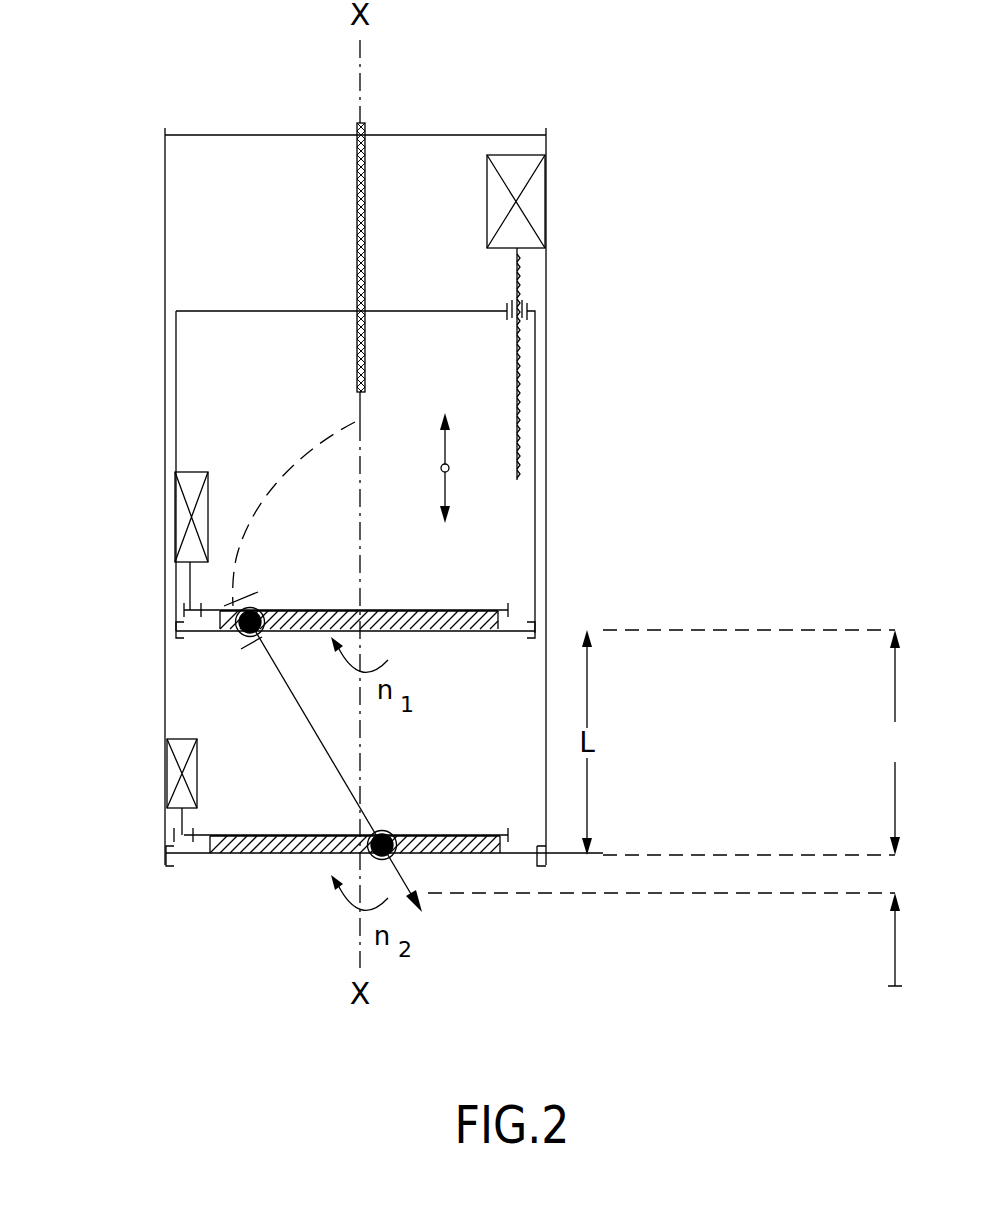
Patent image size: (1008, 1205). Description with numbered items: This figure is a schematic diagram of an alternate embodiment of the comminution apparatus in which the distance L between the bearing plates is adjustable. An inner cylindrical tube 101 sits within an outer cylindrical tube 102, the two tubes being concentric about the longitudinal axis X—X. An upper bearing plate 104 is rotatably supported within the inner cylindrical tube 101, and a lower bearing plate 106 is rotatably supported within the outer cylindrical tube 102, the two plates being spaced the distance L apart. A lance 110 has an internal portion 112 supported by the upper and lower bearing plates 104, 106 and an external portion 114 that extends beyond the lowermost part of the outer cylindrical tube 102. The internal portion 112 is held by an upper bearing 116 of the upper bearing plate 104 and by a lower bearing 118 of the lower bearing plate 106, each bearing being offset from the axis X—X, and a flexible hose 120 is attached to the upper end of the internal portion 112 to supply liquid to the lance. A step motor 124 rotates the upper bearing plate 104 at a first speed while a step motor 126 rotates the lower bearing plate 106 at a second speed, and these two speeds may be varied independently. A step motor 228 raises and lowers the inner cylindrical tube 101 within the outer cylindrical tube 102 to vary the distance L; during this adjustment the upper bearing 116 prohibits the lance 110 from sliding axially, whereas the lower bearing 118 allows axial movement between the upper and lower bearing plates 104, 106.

The inner cylindrical tube 101 is at (537, 388).
The outer cylindrical tube 102 is at (546, 478).
The upper bearing plate 104 is at (473, 620).
The lower bearing plate 106 is at (457, 855).
The lance 110 is at (313, 732).
The lance internal portion 112 is at (760, 742).
The lance external portion 114 is at (672, 922).
The upper bearing 116 is at (245, 612).
The lower bearing 118 is at (390, 828).
The flexible hose 120 is at (365, 155).
The step motor 124 is at (178, 510).
The step motor 126 is at (167, 773).
The step motor 228 is at (533, 205).